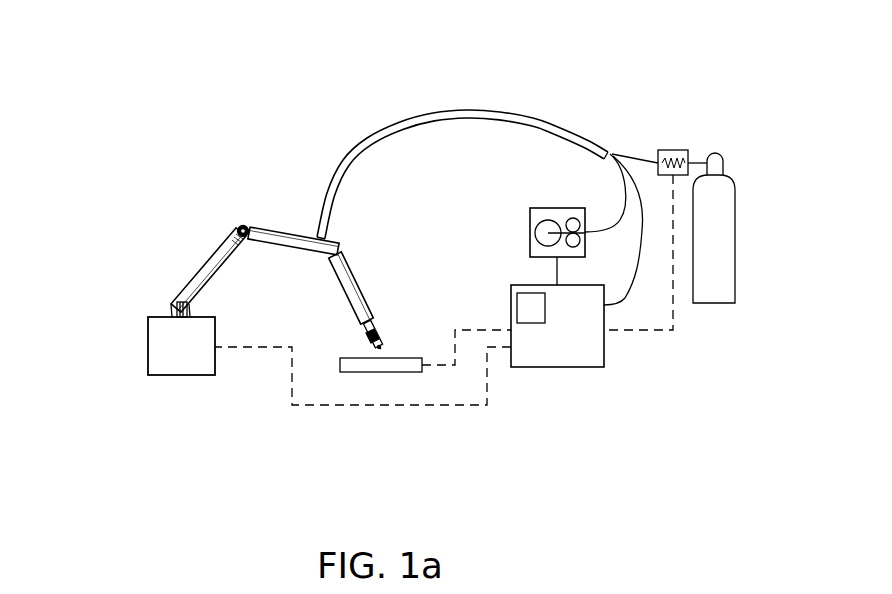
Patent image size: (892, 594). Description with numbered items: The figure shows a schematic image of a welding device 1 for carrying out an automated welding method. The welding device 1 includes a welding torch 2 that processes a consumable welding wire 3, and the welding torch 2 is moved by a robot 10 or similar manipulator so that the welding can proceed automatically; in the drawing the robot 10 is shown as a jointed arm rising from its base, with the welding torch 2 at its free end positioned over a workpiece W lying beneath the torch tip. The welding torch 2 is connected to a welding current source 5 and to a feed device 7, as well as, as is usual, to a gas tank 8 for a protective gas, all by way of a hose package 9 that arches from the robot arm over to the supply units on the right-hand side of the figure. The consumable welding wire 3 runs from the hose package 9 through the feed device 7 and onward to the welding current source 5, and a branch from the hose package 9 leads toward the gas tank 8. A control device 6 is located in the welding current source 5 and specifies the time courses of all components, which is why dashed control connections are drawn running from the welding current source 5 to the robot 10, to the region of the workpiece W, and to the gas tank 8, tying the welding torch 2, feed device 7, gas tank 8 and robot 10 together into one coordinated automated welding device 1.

The welding device 1 is at (221, 128).
The welding torch 2 is at (376, 332).
The consumable welding wire 3 is at (623, 193).
The welding current source 5 is at (566, 339).
The control device 6 is at (538, 319).
The feed device 7 is at (530, 229).
The gas tank 8 is at (735, 243).
The hose package 9 is at (512, 116).
The robot 10 is at (148, 347).
The workpiece W is at (378, 373).